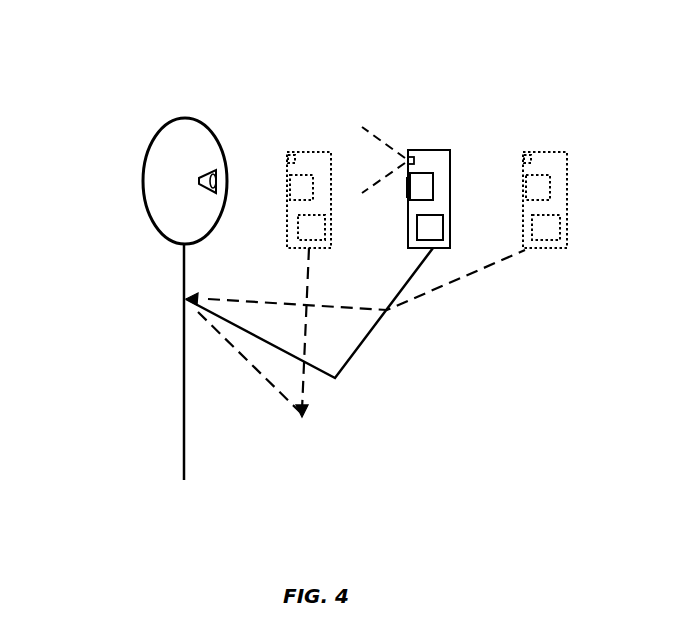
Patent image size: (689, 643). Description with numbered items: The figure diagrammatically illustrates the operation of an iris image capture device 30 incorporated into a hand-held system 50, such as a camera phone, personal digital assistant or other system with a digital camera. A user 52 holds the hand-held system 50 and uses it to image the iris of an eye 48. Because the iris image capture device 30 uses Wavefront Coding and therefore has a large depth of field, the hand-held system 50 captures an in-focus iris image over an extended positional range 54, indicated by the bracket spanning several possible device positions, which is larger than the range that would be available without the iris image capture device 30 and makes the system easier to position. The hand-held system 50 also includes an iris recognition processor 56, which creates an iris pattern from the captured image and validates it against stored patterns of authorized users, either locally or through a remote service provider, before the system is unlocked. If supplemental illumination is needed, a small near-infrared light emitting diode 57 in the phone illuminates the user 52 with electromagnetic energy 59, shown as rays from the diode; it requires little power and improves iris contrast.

The iris image capture device 30 is at (433, 183).
The eye 48 is at (197, 180).
The hand-held system 50 is at (412, 248).
The user 52 is at (141, 299).
The extended positional range 54 is at (525, 105).
The iris recognition processor 56 is at (443, 228).
The near-infrared light emitting diode 57 is at (414, 161).
The electromagnetic energy 59 is at (396, 152).